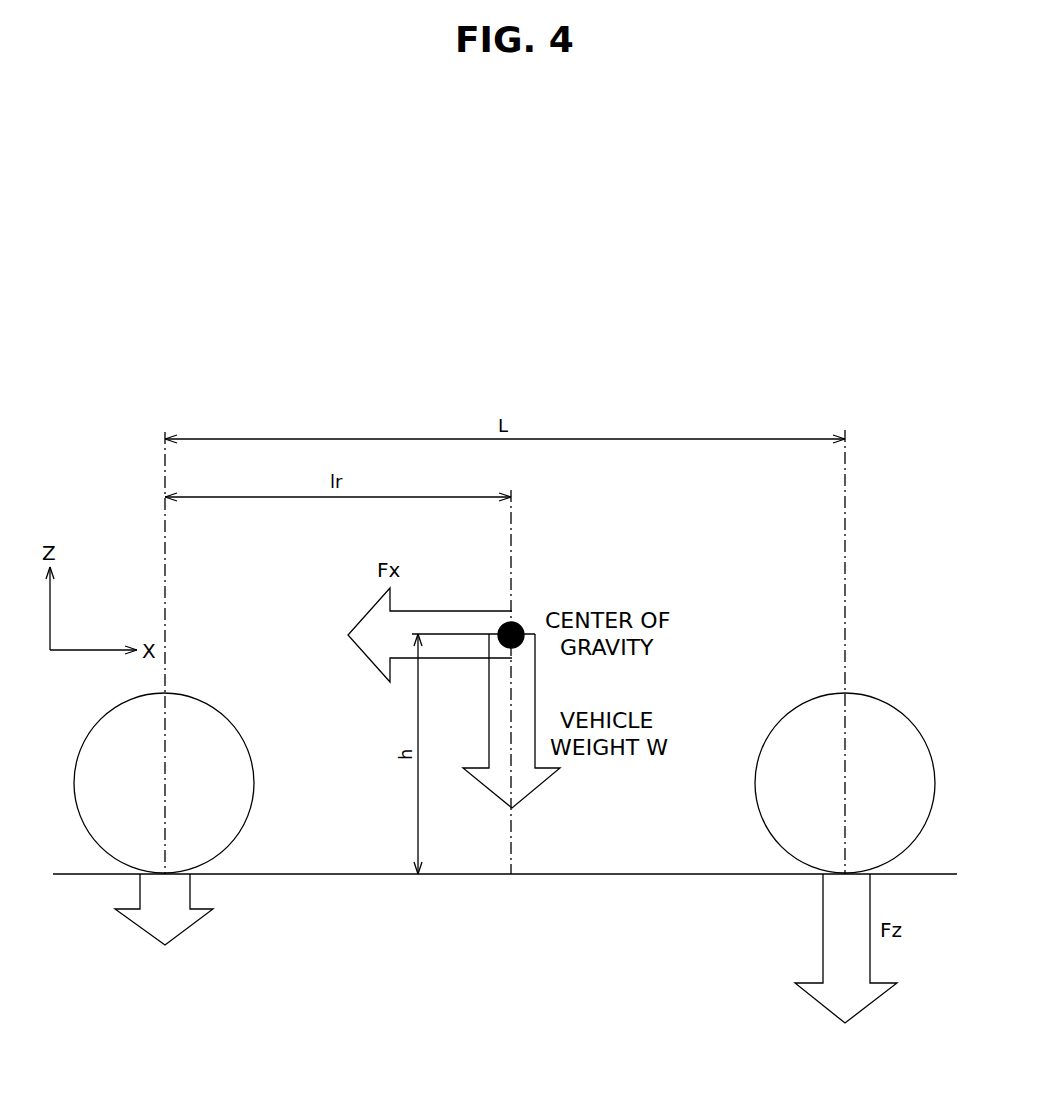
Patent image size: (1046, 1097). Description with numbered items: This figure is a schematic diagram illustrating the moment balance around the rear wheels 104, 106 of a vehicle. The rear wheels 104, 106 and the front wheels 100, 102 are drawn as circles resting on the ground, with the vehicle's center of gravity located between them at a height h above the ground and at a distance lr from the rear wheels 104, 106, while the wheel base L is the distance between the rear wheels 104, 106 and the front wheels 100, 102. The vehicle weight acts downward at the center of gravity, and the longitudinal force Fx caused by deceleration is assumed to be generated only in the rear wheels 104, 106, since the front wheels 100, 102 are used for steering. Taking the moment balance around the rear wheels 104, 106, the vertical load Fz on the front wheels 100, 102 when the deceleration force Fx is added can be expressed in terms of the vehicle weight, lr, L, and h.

The front wheel 100 is at (857, 757).
The front wheel 102 is at (877, 695).
The rear wheel 104 is at (176, 757).
The rear wheel 106 is at (196, 694).